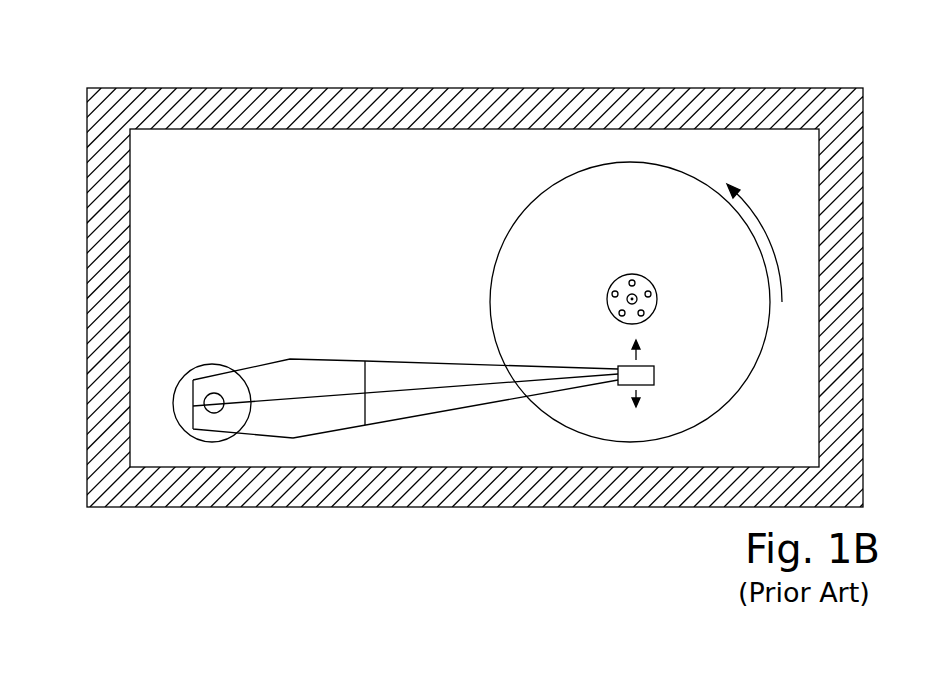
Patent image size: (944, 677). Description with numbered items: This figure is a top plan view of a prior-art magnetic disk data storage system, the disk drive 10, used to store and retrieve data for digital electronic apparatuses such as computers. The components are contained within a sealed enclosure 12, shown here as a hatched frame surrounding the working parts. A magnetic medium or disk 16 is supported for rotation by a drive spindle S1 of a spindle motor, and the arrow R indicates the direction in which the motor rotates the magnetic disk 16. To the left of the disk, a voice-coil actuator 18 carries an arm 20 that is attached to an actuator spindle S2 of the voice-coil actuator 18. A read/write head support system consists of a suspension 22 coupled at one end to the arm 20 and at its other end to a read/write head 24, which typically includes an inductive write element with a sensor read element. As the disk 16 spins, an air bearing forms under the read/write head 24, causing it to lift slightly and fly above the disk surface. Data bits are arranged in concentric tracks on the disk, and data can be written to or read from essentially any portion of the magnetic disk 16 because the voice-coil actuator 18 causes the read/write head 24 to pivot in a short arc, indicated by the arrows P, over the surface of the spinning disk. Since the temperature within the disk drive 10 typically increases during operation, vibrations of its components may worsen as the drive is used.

The disk drive 10 is at (472, 284).
The sealed enclosure 12 is at (458, 497).
The magnetic disk 16 is at (645, 197).
The voice-coil actuator 18 is at (221, 368).
The arm 20 is at (333, 372).
The suspension 22 is at (432, 403).
The read/write head 24 is at (652, 375).
The drive spindle S1 is at (648, 283).
The actuator spindle S2 is at (217, 413).
The arrow R is at (758, 243).
The arrows P is at (646, 375).